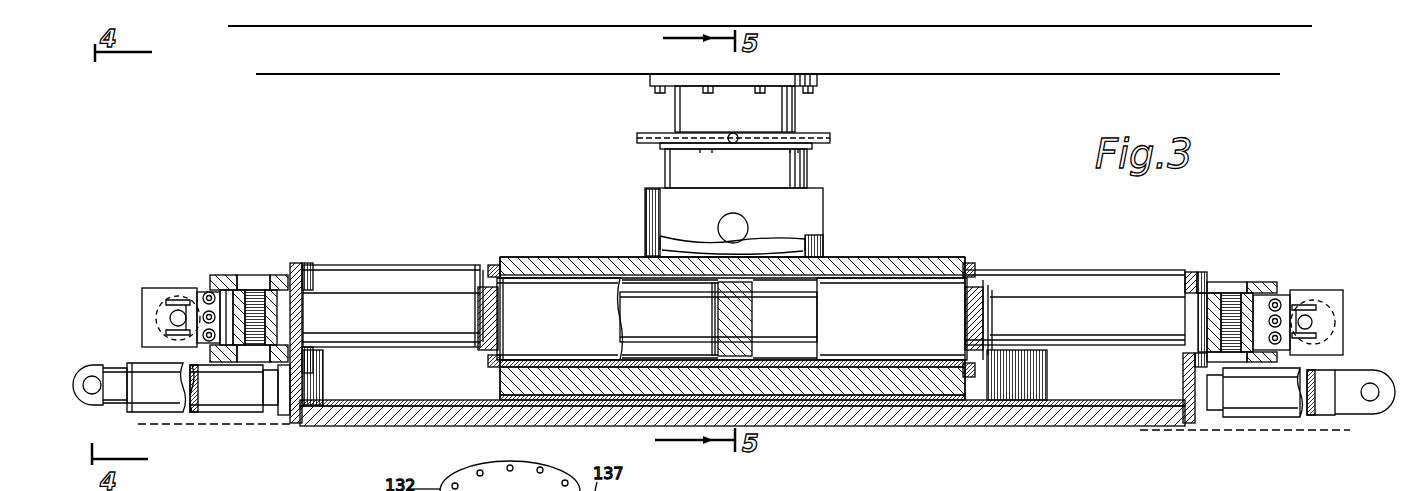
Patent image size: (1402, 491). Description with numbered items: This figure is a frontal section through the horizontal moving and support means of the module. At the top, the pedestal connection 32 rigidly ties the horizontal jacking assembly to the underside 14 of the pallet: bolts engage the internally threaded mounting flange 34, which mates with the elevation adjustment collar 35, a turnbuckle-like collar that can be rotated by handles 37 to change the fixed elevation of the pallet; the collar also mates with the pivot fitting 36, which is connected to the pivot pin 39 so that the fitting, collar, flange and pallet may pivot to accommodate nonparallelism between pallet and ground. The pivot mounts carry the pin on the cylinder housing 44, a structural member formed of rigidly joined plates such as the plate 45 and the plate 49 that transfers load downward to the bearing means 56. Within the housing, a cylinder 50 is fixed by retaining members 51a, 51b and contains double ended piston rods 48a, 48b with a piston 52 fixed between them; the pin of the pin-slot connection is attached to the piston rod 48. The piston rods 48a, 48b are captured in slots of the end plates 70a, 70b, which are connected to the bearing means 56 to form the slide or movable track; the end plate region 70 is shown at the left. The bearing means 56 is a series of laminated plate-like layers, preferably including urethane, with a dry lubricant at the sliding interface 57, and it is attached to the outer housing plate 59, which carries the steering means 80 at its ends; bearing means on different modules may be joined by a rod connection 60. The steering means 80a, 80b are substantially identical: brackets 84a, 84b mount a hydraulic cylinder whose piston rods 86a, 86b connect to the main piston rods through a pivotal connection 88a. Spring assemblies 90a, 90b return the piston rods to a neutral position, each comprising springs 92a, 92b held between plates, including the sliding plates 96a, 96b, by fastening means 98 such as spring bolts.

The underside 14 is at (1002, 76).
The pedestal connection 32 is at (806, 126).
The mounting flange 34 is at (683, 99).
The elevation adjustment collar 35 is at (693, 138).
The pivot fitting 36 is at (798, 172).
The handles 37 is at (826, 147).
The pivot pin 39 is at (744, 228).
The cylinder housing 44 is at (732, 307).
The plate 45 is at (880, 258).
The piston rod 48 is at (642, 312).
The piston rod 48a is at (417, 292).
The piston rod 48b is at (1150, 300).
The plate 49 is at (845, 390).
The cylinder 50 is at (530, 300).
The retaining member 51a is at (495, 370).
The retaining member 51b is at (973, 378).
The piston 52 is at (815, 270).
The bearing means 56 is at (931, 421).
The interface 57 is at (540, 407).
The outer housing plate 59 is at (675, 377).
The rod connection 60 is at (88, 400).
The end cap 70 is at (292, 411).
The end plate 70a is at (278, 406).
The end plate 70b is at (1188, 416).
The steering means 80 is at (732, 319).
The steering means 80a is at (682, 319).
The steering means 80b is at (1289, 306).
The brackets 84a is at (141, 300).
The bracket (right) 84b is at (1335, 312).
The piston rod 86a is at (170, 312).
The yoke (right) 86b is at (1308, 316).
The pivotal connection 88a is at (134, 313).
The spring assembly 90a is at (199, 356).
The direction of movement (right) 90b is at (1296, 363).
The springs 92a is at (697, 331).
The bolt plate (right) 92b is at (1262, 306).
The plate 96a is at (230, 290).
The flange coupling (right) 96b is at (1263, 290).
The fastening means 98 is at (187, 335).